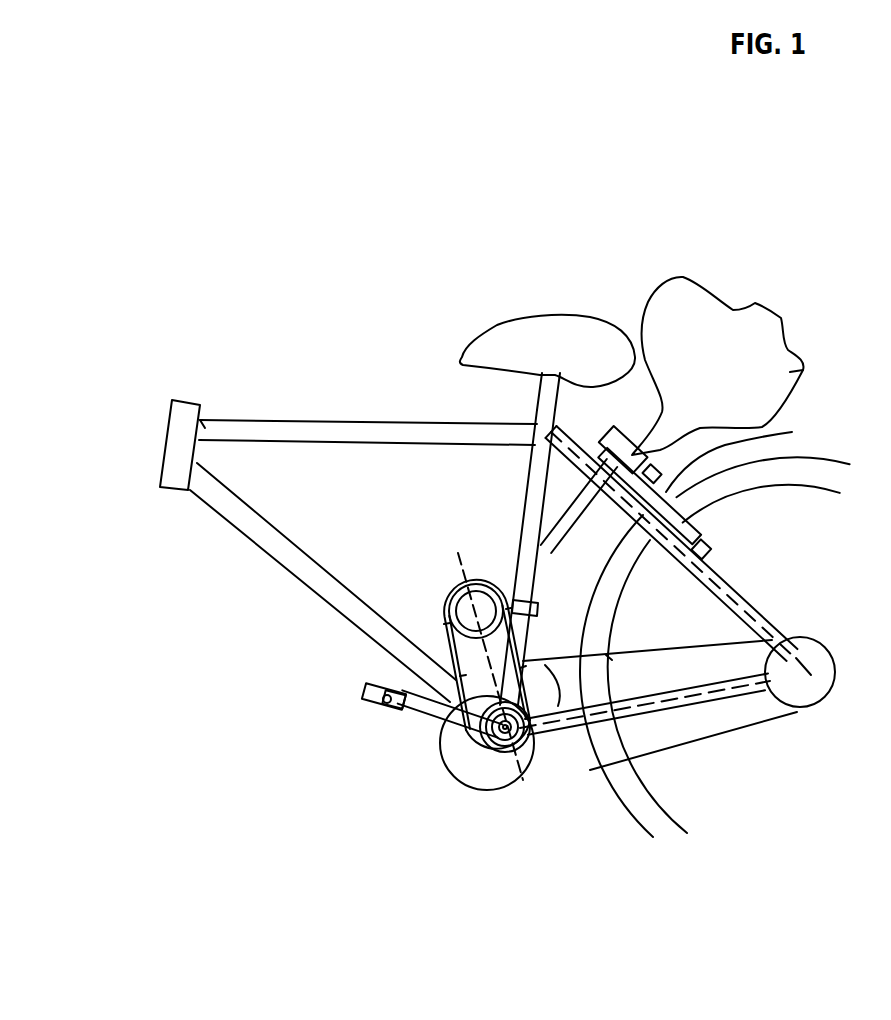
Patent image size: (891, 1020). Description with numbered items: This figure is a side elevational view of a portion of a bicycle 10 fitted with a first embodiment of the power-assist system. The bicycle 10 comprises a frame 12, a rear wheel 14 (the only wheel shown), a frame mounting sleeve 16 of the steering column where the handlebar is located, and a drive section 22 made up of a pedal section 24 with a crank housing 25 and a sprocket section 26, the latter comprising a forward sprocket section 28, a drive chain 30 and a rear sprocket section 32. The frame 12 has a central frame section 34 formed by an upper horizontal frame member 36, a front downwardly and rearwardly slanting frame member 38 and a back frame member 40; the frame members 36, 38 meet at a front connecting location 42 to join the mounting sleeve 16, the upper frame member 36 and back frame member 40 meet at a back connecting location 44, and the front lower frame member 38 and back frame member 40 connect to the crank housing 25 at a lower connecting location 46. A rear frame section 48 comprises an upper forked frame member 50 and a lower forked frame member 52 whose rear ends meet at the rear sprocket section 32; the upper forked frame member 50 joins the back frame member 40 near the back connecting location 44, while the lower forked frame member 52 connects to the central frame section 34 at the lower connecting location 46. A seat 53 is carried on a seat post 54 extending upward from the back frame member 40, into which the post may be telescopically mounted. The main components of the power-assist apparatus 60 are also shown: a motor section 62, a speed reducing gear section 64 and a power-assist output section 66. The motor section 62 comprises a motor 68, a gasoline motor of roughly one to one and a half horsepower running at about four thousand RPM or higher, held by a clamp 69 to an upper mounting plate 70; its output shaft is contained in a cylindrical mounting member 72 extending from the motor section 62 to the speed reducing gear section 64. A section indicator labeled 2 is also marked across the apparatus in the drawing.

The section line 2- 2 is at (458, 553).
The bicycle 10 is at (265, 601).
The frame 12 is at (231, 552).
The rear wheel 14 is at (653, 822).
The frame mounting sleeve 16 is at (166, 440).
The drive section 22 is at (410, 718).
The pedal section 24 is at (480, 790).
The crank housing 25 is at (498, 760).
The sprocket section 26 is at (630, 650).
The forward sprocket section 28 is at (545, 680).
The drive chain 30 is at (693, 657).
The rear sprocket section 32 is at (838, 668).
The central frame section 34 is at (262, 393).
The upper horizontal frame member 36 is at (352, 423).
The front downwardly and rearwardly slanting frame member 38 is at (304, 556).
The back frame member 40 is at (527, 487).
The front connecting location 42 is at (204, 452).
The back connecting location 44 is at (554, 436).
The lower connecting location 46 is at (583, 758).
The rear frame section 48 is at (750, 600).
The upper forked frame member 50 is at (747, 452).
The lower forked frame member 52 is at (658, 700).
The seat 53 is at (533, 322).
The seat post 54 is at (541, 386).
The power-assist apparatus 60 is at (452, 545).
The motor section 62 is at (779, 316).
The speed reducing gear section 64 is at (440, 597).
The power-assist output section 66 is at (466, 750).
The motor 68 is at (787, 378).
The clamp 69 is at (616, 443).
The upper mounting plate 70 is at (686, 534).
The cylindrical mounting member 72 is at (547, 541).